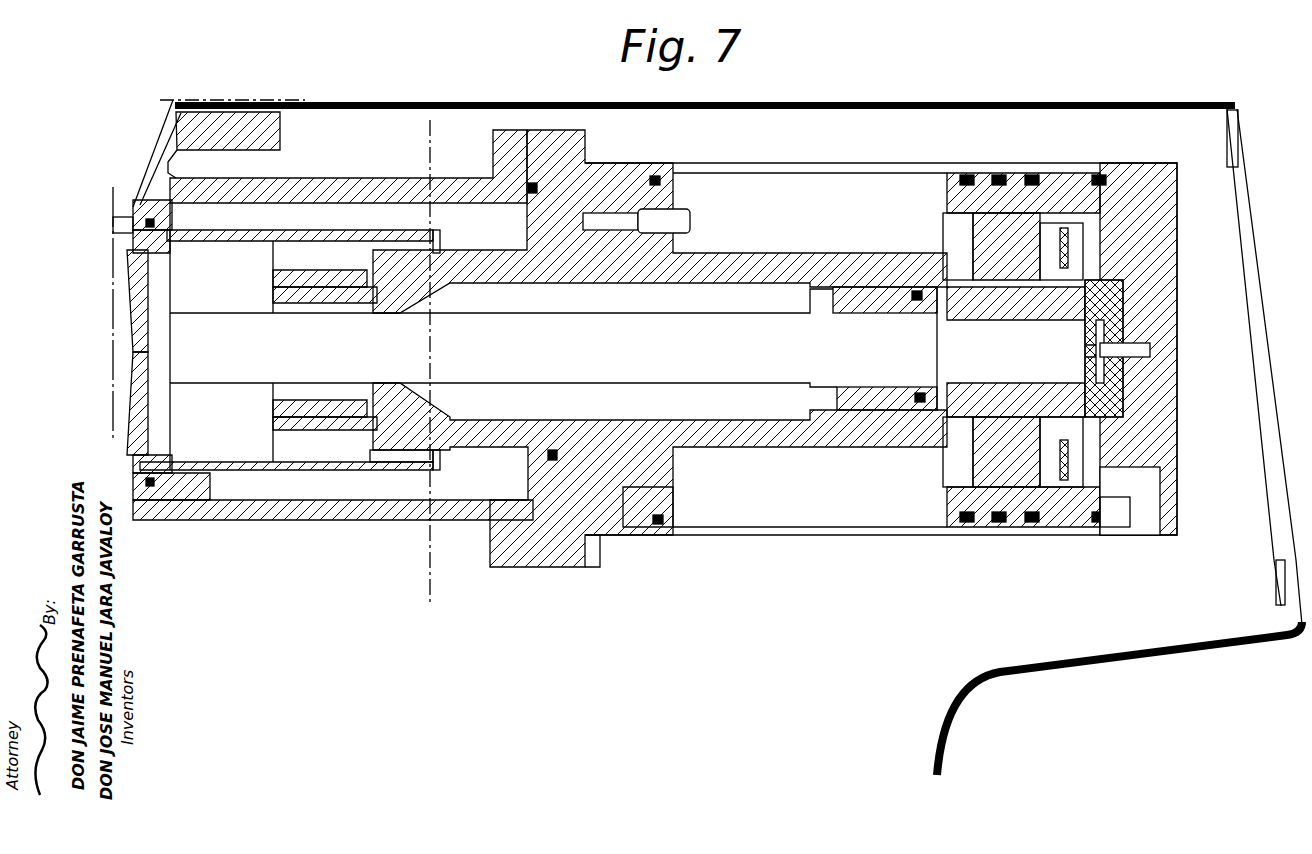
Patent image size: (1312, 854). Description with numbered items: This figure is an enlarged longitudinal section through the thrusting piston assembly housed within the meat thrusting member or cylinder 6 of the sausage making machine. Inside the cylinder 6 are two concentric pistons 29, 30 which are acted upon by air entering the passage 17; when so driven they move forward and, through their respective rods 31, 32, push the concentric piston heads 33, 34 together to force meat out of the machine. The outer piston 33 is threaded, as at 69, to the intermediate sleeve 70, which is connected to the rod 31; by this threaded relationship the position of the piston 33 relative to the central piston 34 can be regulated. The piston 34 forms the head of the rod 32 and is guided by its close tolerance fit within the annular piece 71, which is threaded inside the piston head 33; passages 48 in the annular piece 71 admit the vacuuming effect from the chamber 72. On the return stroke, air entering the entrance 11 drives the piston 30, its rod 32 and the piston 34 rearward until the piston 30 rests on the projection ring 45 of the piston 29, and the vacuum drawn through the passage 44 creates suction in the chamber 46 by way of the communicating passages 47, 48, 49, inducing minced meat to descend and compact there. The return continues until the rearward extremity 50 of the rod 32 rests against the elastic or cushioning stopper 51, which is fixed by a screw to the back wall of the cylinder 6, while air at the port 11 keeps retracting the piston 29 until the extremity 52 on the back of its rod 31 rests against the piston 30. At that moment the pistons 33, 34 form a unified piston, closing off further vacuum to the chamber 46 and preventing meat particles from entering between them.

The meat thrusting member or cylinder 6 is at (331, 190).
The entrance 11 is at (603, 522).
The passage 17 is at (1143, 520).
The concentric pivot (piston) 29 is at (1043, 197).
The concentric pivot (piston) 30 is at (1012, 222).
The rod 31 is at (470, 250).
The rod 32 is at (297, 350).
The concentric piston 33 is at (133, 250).
The concentric piston 34 is at (157, 385).
The passage 44 is at (387, 457).
The projection ring 45 is at (1047, 473).
The chamber 46 is at (120, 268).
The passage 47 is at (378, 453).
The passages 48 is at (137, 447).
The passage 49 is at (140, 430).
The rearward extremity 50 is at (1063, 343).
The elastic or cushioning stopper 51 is at (1128, 296).
The extremity 52 is at (980, 425).
The threaded connection 69 is at (135, 203).
The intermediate sleeve 70 is at (242, 228).
The annular piece 71 is at (140, 412).
The chamber 72 is at (193, 442).